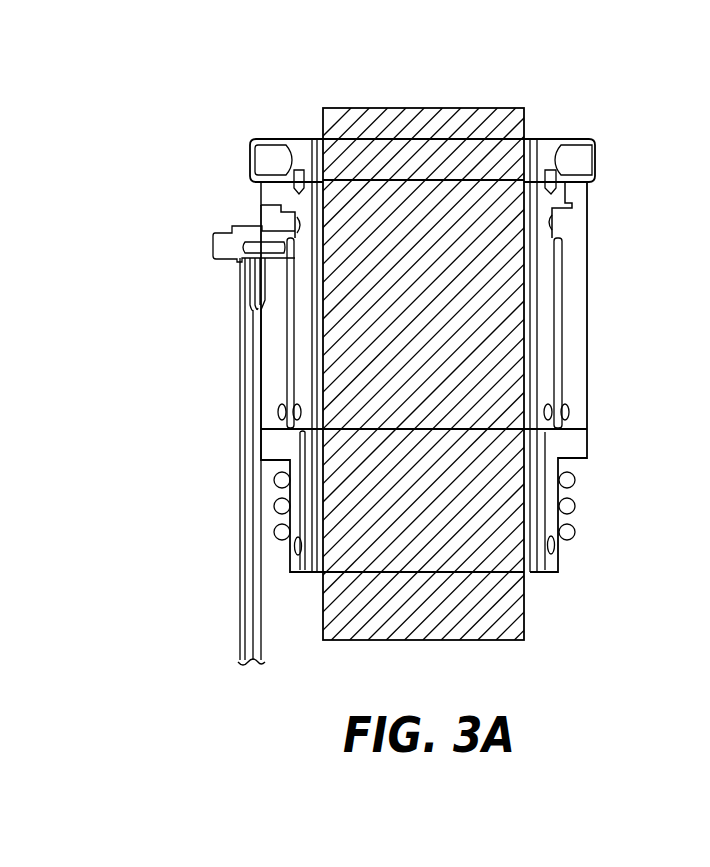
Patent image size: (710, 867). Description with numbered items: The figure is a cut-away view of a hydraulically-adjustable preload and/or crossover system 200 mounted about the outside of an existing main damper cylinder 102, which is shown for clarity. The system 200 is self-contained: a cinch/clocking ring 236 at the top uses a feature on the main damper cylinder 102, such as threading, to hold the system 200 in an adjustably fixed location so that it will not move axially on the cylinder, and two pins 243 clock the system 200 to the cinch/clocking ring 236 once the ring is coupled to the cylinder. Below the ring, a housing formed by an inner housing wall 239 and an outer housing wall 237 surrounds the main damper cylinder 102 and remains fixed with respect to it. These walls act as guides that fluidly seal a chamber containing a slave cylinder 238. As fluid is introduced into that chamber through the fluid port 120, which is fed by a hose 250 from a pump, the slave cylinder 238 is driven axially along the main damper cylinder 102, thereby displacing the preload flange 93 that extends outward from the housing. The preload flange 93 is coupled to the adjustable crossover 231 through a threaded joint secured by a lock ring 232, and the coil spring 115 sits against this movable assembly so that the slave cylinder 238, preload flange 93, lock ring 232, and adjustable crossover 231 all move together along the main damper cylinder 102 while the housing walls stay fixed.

The hydraulically-adjustable preload and/or crossover system 200 is at (366, 50).
The main damper cylinder 102 is at (524, 602).
The cinch/clocking ring 236 is at (592, 143).
The pins 243 is at (562, 178).
The inner housing wall 239 is at (545, 263).
The slave cylinder 238 is at (561, 312).
The outer housing wall 237 is at (588, 363).
The preload flange 93 is at (587, 436).
The coil spring 115 is at (582, 484).
The lock ring 232 is at (557, 548).
The adjustable crossover 231 is at (545, 563).
The fluid port 120 is at (213, 240).
The hose 250 is at (237, 420).